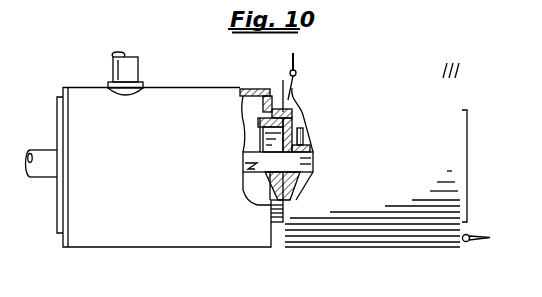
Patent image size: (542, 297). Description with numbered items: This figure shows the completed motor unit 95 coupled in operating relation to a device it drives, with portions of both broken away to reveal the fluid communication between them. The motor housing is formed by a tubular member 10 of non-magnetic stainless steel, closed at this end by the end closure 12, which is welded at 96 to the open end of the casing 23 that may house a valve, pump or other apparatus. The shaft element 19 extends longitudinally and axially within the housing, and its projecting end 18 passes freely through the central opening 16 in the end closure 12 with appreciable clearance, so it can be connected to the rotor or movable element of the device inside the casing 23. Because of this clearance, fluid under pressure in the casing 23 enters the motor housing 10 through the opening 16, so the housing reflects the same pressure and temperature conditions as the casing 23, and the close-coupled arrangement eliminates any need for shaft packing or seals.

The tubular member 10 is at (295, 112).
The end closure 12 is at (260, 107).
The central opening 16 is at (280, 179).
The projecting end 18 is at (248, 163).
The shaft element 19 is at (318, 161).
The casing 23 is at (168, 92).
The motor unit 95 is at (385, 87).
The weld 96 is at (272, 89).